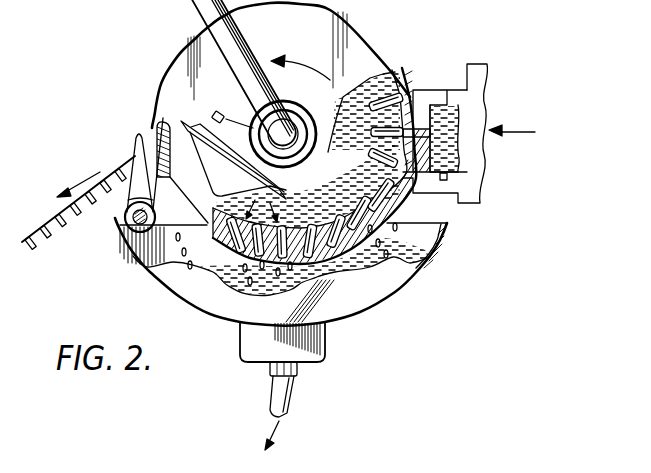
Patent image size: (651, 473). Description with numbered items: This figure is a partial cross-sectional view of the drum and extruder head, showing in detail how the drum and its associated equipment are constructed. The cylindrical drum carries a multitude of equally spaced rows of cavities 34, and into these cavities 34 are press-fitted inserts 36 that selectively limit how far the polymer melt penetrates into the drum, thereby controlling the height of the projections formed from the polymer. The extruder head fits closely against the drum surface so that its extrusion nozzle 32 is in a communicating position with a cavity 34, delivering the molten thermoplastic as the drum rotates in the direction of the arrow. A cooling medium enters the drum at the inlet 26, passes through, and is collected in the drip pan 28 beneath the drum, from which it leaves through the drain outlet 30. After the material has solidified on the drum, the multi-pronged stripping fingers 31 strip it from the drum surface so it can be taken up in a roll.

The inlet 26 is at (250, 47).
The drip pan 28 is at (392, 299).
The drain outlet 30 is at (294, 389).
The stripping fingers 31 is at (133, 152).
The extrusion nozzle 32 is at (487, 101).
The cavity 34 is at (413, 92).
The insert 36 is at (395, 72).